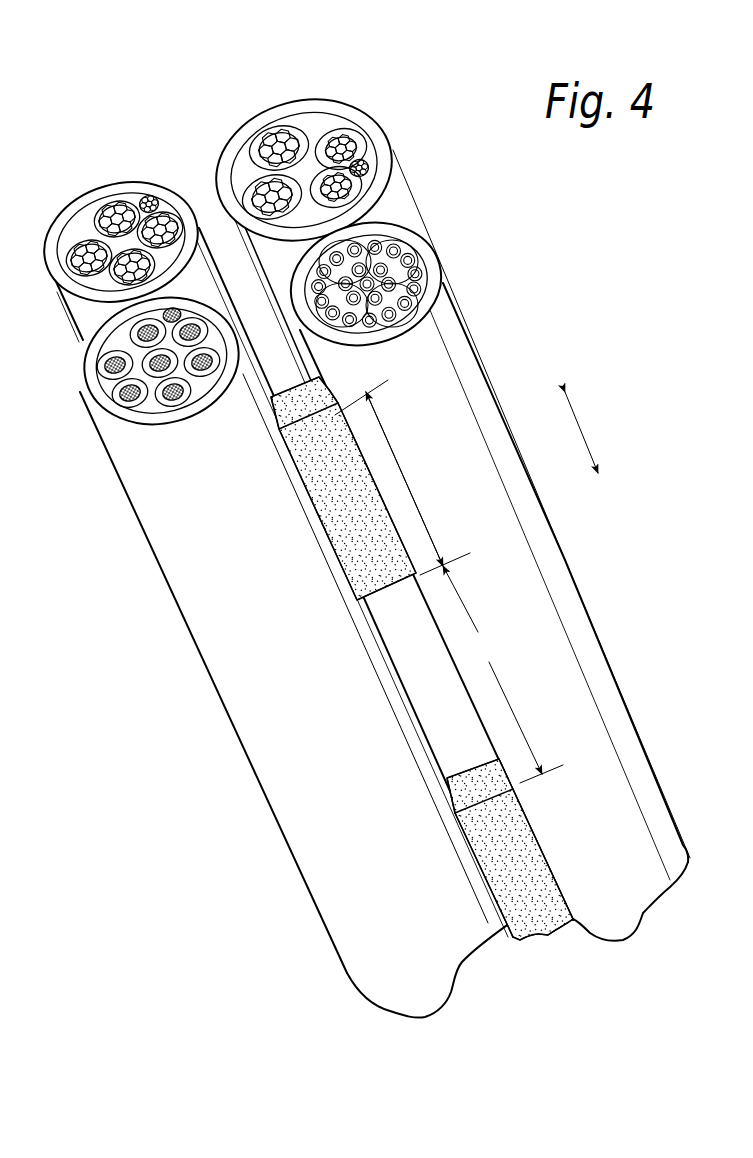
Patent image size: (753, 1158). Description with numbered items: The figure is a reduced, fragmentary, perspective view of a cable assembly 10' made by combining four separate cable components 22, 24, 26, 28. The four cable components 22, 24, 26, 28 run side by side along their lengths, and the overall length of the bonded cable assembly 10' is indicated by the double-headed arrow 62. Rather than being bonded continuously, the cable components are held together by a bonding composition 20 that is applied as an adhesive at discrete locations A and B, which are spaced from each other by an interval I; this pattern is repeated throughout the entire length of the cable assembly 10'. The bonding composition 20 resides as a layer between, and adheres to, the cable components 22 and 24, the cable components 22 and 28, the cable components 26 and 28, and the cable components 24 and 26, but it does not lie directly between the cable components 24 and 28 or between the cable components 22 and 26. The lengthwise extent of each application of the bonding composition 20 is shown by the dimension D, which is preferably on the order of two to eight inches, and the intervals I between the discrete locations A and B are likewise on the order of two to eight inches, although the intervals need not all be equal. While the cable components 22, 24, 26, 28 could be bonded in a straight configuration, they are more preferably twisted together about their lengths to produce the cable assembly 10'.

The cable assembly 10' is at (370, 517).
The bonding composition 20 is at (350, 530).
The cable component 22 is at (377, 117).
The cable component 24 is at (445, 362).
The cable component 26 is at (172, 508).
The cable component 28 is at (144, 184).
The double-headed arrow 62 is at (578, 425).
The discrete location A is at (310, 507).
The discrete location B is at (479, 869).
The dimension D is at (402, 477).
The interval I is at (503, 674).